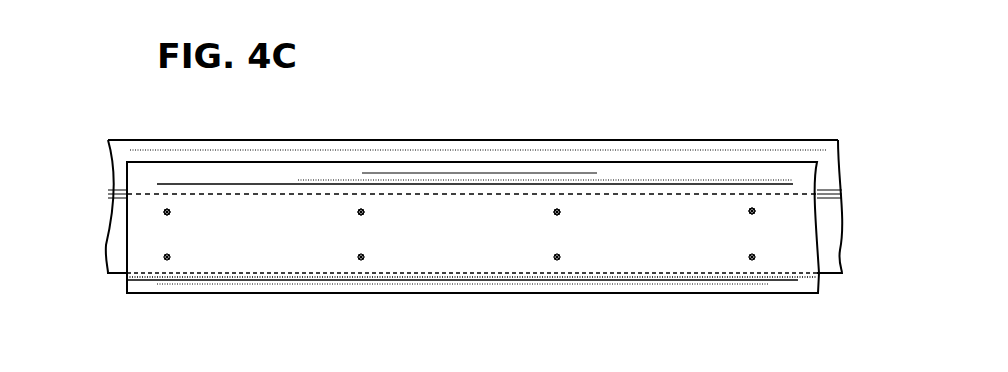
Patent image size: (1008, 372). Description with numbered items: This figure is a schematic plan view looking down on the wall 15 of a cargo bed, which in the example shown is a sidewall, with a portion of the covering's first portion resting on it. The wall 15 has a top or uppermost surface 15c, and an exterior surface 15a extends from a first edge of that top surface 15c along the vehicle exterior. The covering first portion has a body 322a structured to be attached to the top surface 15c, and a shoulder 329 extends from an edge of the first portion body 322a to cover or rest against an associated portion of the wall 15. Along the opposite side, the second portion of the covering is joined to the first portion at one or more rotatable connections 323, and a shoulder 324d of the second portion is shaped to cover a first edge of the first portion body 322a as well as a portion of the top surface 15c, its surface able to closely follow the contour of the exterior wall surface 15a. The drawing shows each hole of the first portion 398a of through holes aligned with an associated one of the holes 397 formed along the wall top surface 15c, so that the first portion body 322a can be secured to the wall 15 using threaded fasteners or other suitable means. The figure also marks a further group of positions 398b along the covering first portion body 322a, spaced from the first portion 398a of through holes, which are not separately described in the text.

The wall 15 is at (497, 141).
The exterior surface 15a is at (618, 156).
The top surface 15c is at (398, 196).
The first portion body 322a is at (124, 218).
The shoulder 324d is at (270, 177).
The rotatable connection 323 is at (282, 280).
The shoulder 329 is at (488, 294).
The holes 397 is at (459, 207).
The first portion of through holes 398a is at (357, 213).
The lower fastening points 398b is at (357, 257).